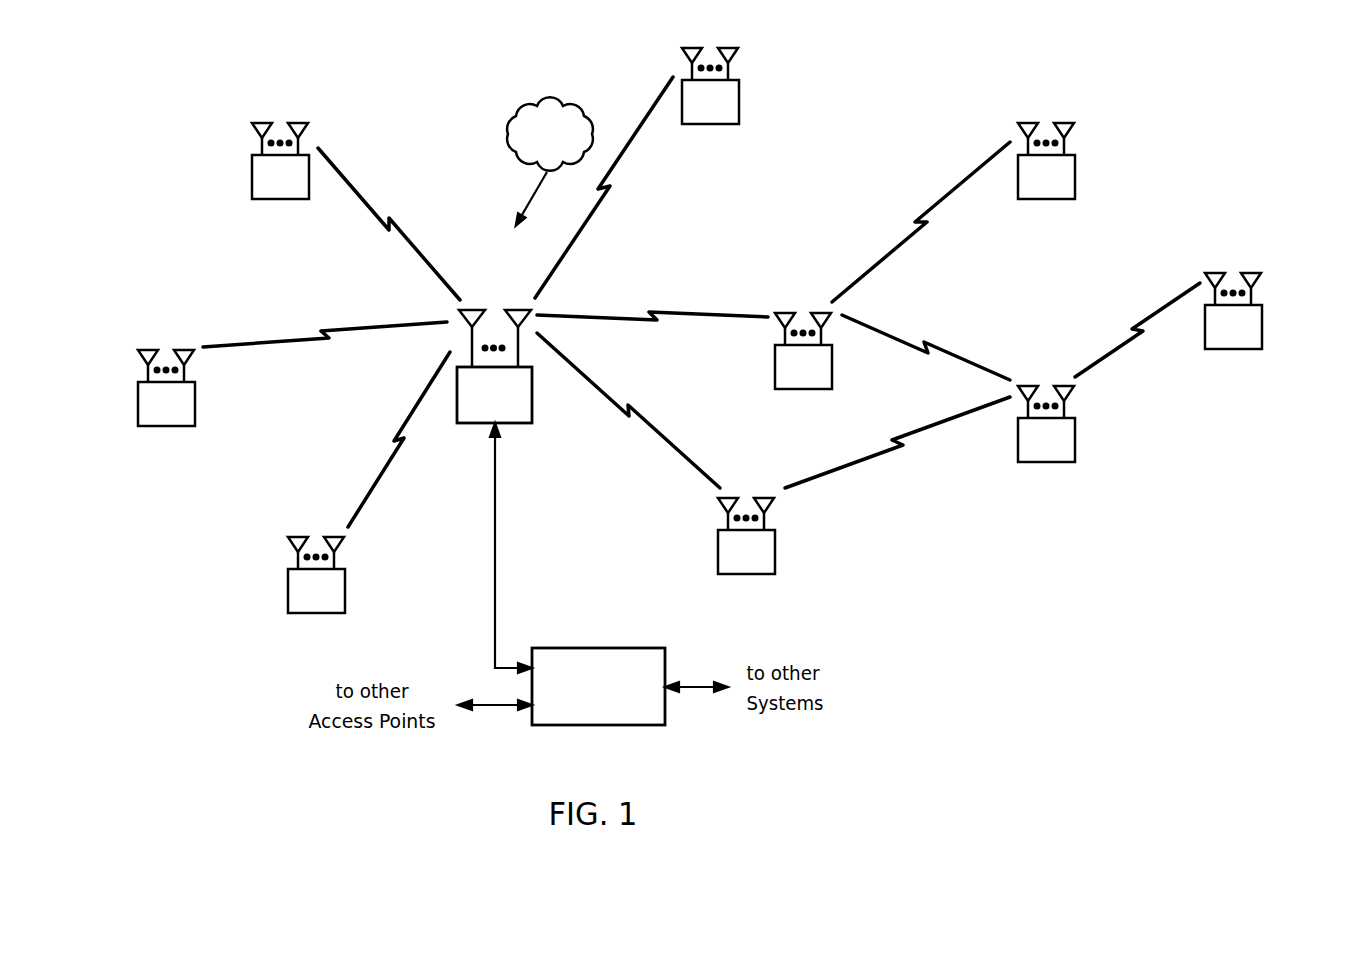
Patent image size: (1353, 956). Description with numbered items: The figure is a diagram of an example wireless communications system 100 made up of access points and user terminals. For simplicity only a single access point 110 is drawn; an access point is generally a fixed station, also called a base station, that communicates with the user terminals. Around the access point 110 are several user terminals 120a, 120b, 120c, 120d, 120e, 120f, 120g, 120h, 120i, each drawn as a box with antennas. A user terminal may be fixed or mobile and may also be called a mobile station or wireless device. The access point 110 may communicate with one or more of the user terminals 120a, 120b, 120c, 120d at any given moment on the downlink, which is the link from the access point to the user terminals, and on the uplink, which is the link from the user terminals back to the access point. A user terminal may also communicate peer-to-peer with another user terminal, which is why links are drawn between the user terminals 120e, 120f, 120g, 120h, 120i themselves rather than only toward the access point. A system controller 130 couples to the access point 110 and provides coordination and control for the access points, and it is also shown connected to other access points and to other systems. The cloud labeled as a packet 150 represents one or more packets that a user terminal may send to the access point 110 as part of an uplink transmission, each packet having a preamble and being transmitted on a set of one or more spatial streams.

The wireless communications system 100 is at (1260, 76).
The access point 110 is at (518, 423).
The user terminal 120a is at (288, 598).
The user terminal 120b is at (138, 411).
The user terminal 120c is at (252, 184).
The user terminal 120d is at (739, 106).
The user terminal 120e is at (775, 369).
The user terminal 120f is at (776, 557).
The user terminal 120g is at (1075, 445).
The user terminal 120h is at (1262, 333).
The user terminal 120i is at (1075, 185).
The system controller 130 is at (598, 648).
The packet 150 is at (510, 108).